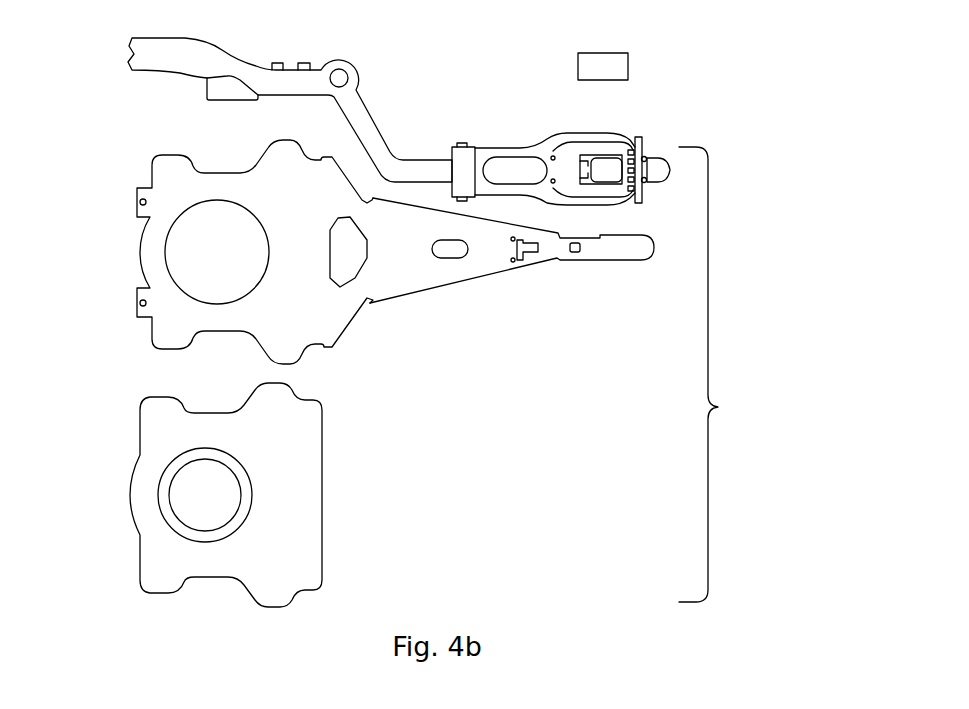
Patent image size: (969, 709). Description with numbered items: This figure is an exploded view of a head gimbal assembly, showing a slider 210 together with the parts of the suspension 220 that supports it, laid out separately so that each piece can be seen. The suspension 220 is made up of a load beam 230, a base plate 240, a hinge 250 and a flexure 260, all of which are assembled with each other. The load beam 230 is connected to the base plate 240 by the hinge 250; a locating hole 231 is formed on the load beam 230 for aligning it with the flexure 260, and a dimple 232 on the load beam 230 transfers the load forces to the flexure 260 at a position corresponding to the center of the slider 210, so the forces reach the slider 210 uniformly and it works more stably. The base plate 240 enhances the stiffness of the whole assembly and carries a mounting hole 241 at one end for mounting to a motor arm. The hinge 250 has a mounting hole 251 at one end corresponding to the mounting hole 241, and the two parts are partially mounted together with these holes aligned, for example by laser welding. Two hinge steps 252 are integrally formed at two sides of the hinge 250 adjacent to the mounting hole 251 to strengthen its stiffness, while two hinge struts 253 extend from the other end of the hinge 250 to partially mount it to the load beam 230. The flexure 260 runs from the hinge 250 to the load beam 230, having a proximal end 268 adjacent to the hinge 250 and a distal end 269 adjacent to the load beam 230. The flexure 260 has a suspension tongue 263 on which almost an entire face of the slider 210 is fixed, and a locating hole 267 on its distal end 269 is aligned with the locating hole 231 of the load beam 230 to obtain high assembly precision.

The slider 210 is at (600, 65).
The suspension 220 is at (731, 374).
The load beam 230 is at (505, 287).
The locating hole 231 is at (452, 248).
The dimple 232 is at (577, 252).
The base plate 240 is at (341, 554).
The mounting hole 241 is at (215, 497).
The hinge 250 is at (332, 355).
The mounting hole 251 is at (202, 240).
The hinge steps 252 is at (172, 332).
The hinge struts 253 is at (347, 300).
The flexure 260 is at (375, 94).
The suspension tongue 263 is at (602, 170).
The locating hole 267 is at (520, 175).
The proximal end 268 is at (282, 83).
The distal end 269 is at (440, 175).